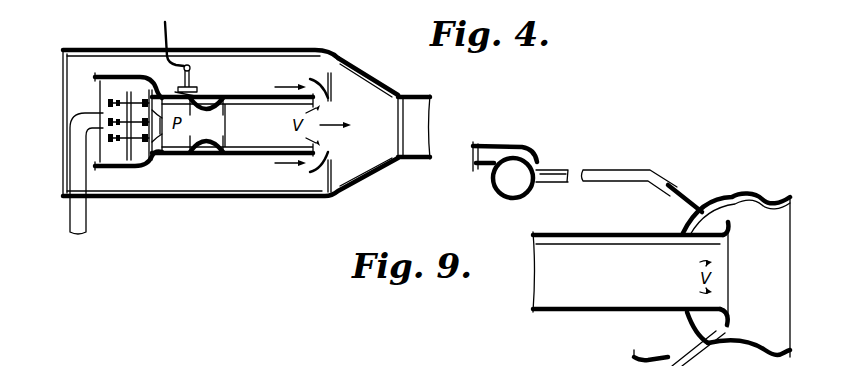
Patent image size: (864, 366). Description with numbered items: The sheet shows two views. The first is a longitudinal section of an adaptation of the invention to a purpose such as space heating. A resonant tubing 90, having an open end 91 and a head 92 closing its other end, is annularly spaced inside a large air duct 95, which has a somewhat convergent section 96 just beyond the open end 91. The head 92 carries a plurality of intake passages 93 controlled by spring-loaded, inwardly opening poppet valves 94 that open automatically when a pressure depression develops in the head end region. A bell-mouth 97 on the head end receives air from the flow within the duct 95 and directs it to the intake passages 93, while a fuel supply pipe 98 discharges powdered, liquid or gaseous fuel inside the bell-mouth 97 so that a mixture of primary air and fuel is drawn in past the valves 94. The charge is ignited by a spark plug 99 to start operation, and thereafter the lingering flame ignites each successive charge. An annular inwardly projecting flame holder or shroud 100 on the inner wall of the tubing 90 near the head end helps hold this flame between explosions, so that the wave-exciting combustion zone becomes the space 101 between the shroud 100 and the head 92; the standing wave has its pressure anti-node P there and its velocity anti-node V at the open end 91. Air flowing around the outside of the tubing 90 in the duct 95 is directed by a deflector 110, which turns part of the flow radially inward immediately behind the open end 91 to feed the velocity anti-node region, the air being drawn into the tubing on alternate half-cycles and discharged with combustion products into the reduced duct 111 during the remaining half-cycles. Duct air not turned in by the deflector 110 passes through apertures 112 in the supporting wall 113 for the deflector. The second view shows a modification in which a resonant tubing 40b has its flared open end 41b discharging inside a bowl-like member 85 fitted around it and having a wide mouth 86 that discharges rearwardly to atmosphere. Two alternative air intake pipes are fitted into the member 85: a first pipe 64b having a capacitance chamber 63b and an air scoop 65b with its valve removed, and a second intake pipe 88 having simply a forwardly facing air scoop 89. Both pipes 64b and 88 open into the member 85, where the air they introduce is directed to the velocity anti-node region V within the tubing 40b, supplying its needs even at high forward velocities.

In FIG. 4, the resonant tubing 90 is at (258, 156).
In FIG. 4, the open end 91 is at (333, 138).
In FIG. 4, the head 92 is at (144, 128).
In FIG. 4, the intake passages 93 is at (150, 150).
In FIG. 4, the poppet valves 94 is at (160, 132).
In FIG. 4, the air duct 95 is at (284, 50).
In FIG. 4, the convergent section 96 is at (372, 84).
In FIG. 4, the bell-mouth 97 is at (118, 76).
In FIG. 4, the fuel supply pipe 98 is at (70, 167).
In FIG. 4, the spark plug 99 is at (195, 66).
In FIG. 4, the flame holder or shroud 100 is at (216, 96).
In FIG. 4, the space 101 is at (162, 134).
In FIG. 4, the deflector 110 is at (318, 78).
In FIG. 4, the reduced duct 111 is at (421, 95).
In FIG. 4, the apertures 112 is at (350, 64).
In FIG. 4, the supporting wall 113 is at (333, 92).
In FIG. 9, the resonant tubing 40b is at (626, 235).
In FIG. 9, the flared open end 41b is at (730, 274).
In FIG. 9, the capacitance chamber 63b is at (522, 165).
In FIG. 9, the air intake pipe 64b is at (668, 183).
In FIG. 9, the air scoop 65b is at (476, 141).
In FIG. 9, the bowl-like member 85 is at (748, 197).
In FIG. 9, the wide mouth 86 is at (790, 197).
In FIG. 9, the intake pipe 88 is at (670, 353).
In FIG. 9, the air scoop 89 is at (632, 360).